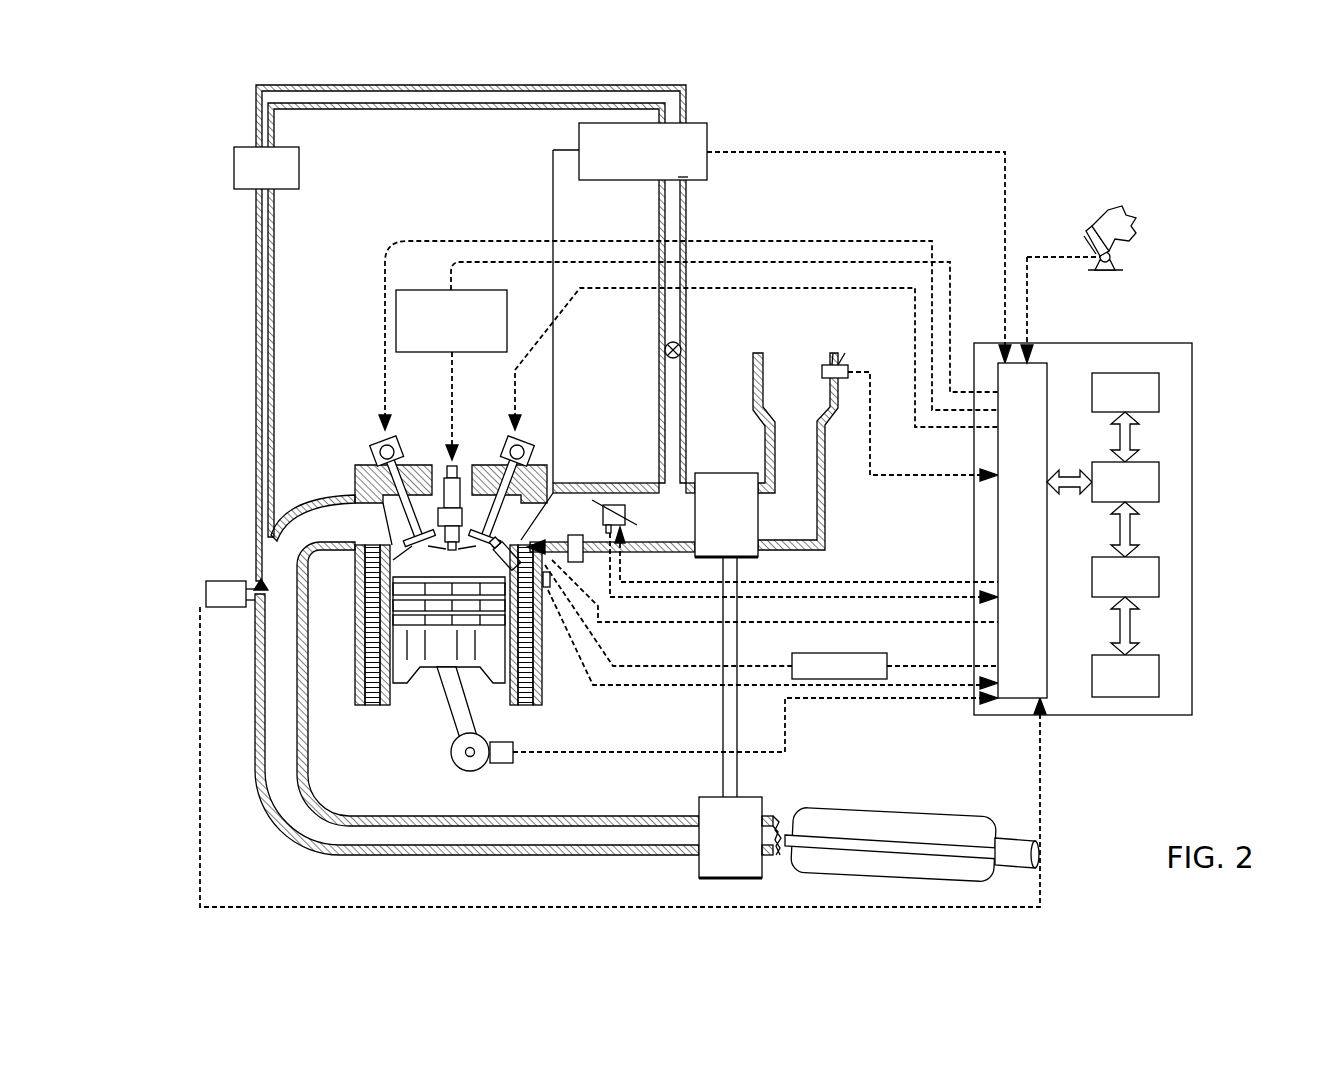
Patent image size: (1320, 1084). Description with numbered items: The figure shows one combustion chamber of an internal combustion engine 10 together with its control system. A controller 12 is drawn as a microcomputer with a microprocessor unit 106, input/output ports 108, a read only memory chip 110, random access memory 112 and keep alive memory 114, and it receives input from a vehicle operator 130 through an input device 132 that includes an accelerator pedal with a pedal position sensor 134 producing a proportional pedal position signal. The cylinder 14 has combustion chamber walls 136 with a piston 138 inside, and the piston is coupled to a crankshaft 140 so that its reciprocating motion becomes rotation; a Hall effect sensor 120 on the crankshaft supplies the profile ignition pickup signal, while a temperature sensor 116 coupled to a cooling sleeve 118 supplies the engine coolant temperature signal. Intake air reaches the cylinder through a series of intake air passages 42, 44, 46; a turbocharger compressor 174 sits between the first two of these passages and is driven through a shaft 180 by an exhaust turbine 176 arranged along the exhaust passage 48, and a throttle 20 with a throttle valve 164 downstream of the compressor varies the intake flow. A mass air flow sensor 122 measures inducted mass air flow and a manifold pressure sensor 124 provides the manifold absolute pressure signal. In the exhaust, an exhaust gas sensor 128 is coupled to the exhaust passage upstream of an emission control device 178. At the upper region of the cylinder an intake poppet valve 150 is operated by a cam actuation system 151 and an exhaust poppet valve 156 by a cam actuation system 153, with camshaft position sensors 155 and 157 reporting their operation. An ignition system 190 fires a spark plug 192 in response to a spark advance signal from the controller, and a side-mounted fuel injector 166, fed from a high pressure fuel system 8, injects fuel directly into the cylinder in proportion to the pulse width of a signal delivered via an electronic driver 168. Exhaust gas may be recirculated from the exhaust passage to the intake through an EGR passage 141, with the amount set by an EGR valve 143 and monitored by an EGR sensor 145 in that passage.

The internal combustion engine 10 is at (198, 187).
The controller 12 is at (1182, 343).
The cylinder 14 is at (395, 570).
The throttle 20 is at (612, 497).
The intake air passage 42 is at (781, 397).
The intake air passage 44 is at (650, 522).
The intake air passage 46 is at (557, 522).
The exhaust passage 48 is at (313, 532).
The high pressure fuel system 8 is at (782, 303).
The microprocessor unit 106 is at (1159, 472).
The input/output ports 108 is at (1050, 371).
The read only memory chip 110 is at (1159, 392).
The random access memory 112 is at (1159, 575).
The keep alive memory 114 is at (1159, 670).
The temperature sensor 116 is at (528, 656).
The cooling sleeve 118 is at (545, 660).
The Hall effect sensor 120 is at (505, 765).
The mass air flow sensor 122 is at (840, 364).
The manifold pressure sensor 124 is at (577, 565).
The exhaust gas sensor 128 is at (206, 583).
The vehicle operator 130 is at (1130, 215).
The input device 132 is at (1085, 229).
The pedal position sensor 134 is at (1112, 258).
The combustion chamber walls 136 is at (395, 700).
The piston 138 is at (437, 688).
The crankshaft 140 is at (462, 768).
The EGR passage 141 is at (686, 215).
The EGR valve 143 is at (682, 348).
The EGR sensor 145 is at (300, 164).
The intake poppet valve 150 is at (454, 520).
The cam actuation system 151 is at (509, 440).
The cam actuation system 153 is at (389, 438).
The camshaft position sensor 155 is at (527, 455).
The exhaust poppet valve 156 is at (413, 538).
The camshaft position sensor 157 is at (377, 455).
The throttle valve 164 is at (484, 541).
The fuel injector 166 is at (512, 545).
The electronic driver 168 is at (793, 654).
The compressor 174 is at (710, 473).
The exhaust turbine 176 is at (699, 860).
The emission control device 178 is at (960, 812).
The shaft 180 is at (737, 757).
The ignition system 190 is at (410, 290).
The spark plug 192 is at (446, 500).